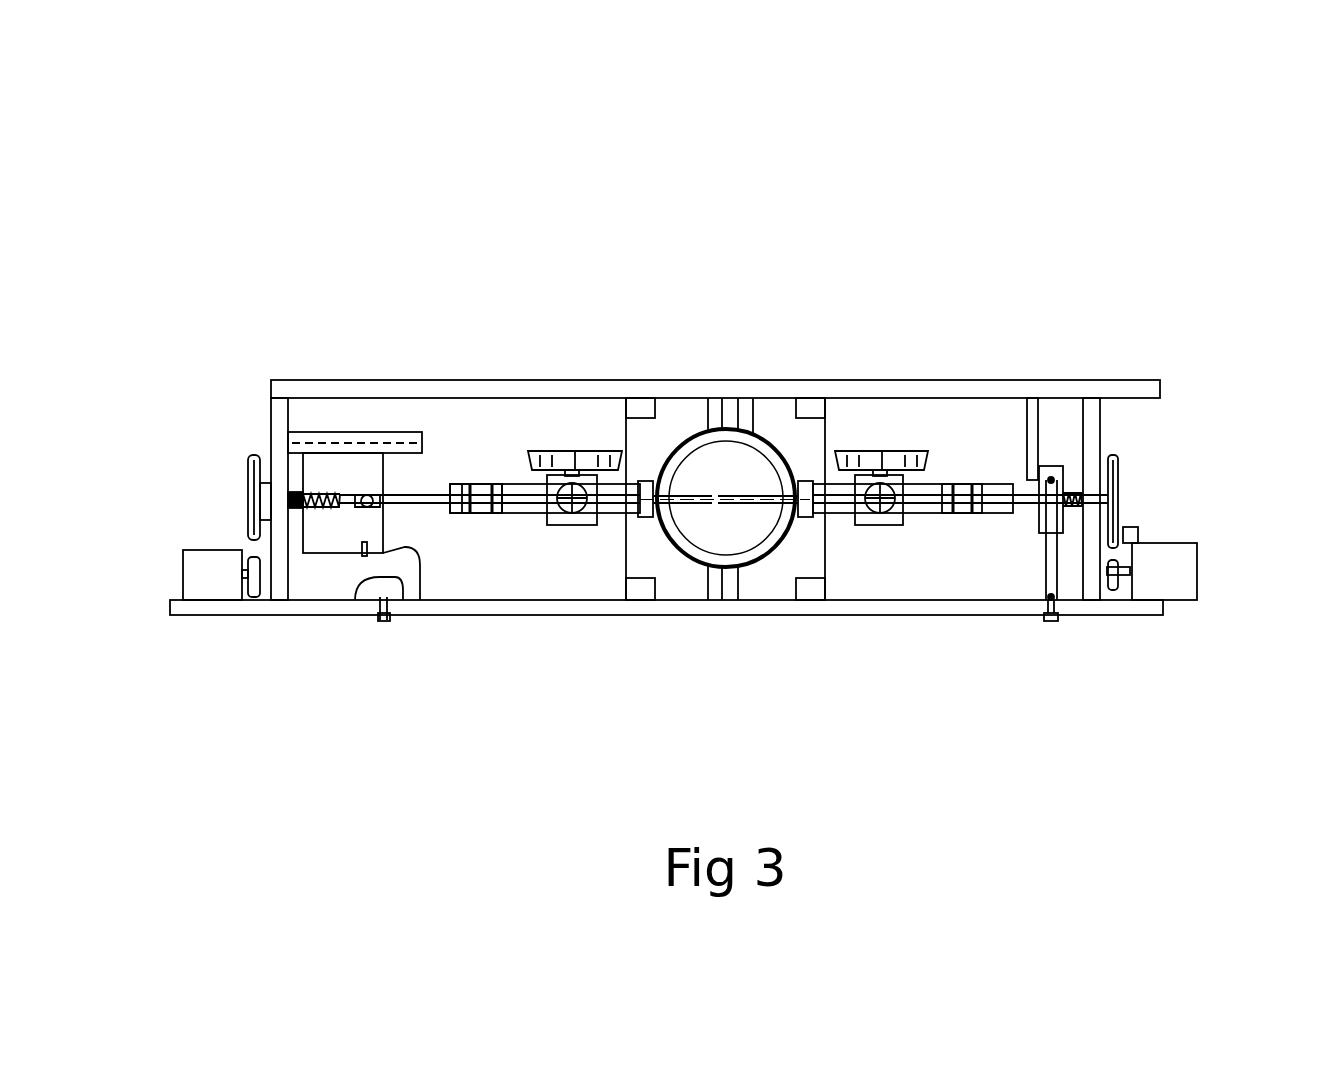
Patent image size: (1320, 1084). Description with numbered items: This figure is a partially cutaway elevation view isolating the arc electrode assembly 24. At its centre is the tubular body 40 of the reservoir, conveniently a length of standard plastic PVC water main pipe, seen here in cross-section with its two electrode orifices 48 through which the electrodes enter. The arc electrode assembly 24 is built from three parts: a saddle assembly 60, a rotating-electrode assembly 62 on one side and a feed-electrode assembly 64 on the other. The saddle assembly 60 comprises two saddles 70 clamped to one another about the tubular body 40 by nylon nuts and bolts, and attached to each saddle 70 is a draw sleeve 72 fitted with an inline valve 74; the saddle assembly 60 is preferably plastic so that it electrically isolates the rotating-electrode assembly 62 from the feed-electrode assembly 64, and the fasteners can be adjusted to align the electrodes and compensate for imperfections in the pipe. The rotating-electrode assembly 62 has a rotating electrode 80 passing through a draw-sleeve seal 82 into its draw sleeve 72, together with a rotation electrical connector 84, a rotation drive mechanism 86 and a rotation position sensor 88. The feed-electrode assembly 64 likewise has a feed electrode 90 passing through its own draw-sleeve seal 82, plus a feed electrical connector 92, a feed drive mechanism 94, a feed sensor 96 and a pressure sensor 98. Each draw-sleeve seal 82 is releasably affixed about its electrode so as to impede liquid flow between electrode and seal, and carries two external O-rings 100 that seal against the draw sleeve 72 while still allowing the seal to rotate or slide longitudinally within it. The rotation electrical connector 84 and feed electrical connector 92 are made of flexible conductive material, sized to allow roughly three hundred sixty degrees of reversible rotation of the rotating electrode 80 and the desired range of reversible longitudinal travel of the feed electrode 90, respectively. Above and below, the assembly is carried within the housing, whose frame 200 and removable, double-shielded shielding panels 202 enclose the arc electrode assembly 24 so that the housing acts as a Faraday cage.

The arc electrode assembly 24 is at (723, 223).
The tubular body 40 is at (752, 458).
The electrode orifices 48 is at (677, 485).
The saddle assembly 60 is at (733, 637).
The rotating-electrode assembly 62 is at (1031, 661).
The feed-electrode assembly 64 is at (411, 664).
The saddles 70 is at (647, 445).
The draw sleeve 72 is at (522, 483).
The inline valve 74 is at (575, 470).
The rotating electrode 80 is at (1023, 500).
The draw-sleeve seal 82 is at (483, 513).
The rotation electrical connector 84 is at (1050, 583).
The rotation drive mechanism 86 is at (1178, 529).
The rotation position sensor 88 is at (1138, 527).
The feed electrode 90 is at (425, 498).
The feed electrical connector 92 is at (370, 575).
The feed drive mechanism 94 is at (207, 533).
The feed sensor 96 is at (267, 483).
The pressure sensor 98 is at (294, 488).
The external O-rings 100 is at (495, 483).
The frame 200 is at (1090, 437).
The shielding panels 202 is at (1078, 388).